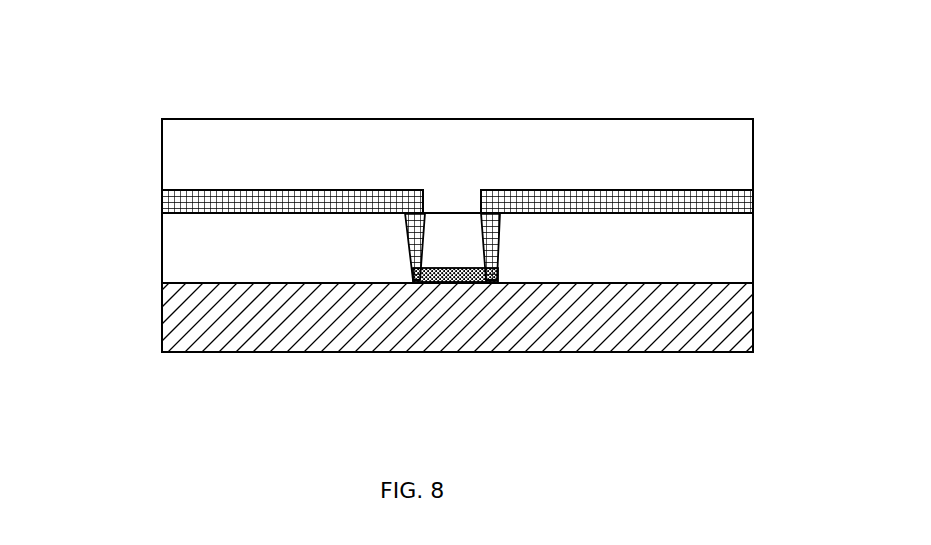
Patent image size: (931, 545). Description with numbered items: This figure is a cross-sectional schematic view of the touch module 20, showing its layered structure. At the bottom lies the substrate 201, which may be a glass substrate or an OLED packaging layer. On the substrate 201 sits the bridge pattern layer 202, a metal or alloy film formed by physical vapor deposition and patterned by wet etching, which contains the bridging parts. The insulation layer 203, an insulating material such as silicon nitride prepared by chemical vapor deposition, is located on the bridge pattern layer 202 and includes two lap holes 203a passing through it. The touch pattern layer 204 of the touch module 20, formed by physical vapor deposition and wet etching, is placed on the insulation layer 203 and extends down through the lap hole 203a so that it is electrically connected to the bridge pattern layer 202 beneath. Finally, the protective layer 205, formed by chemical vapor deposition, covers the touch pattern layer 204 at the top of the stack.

The touch module 20 is at (92, 40).
The substrate 201 is at (207, 313).
The bridge pattern layer 202 is at (468, 276).
The insulation layer 203 is at (195, 259).
The lap hole 203a is at (404, 243).
The touch pattern layer 204 is at (180, 203).
The protective layer 205 is at (192, 173).